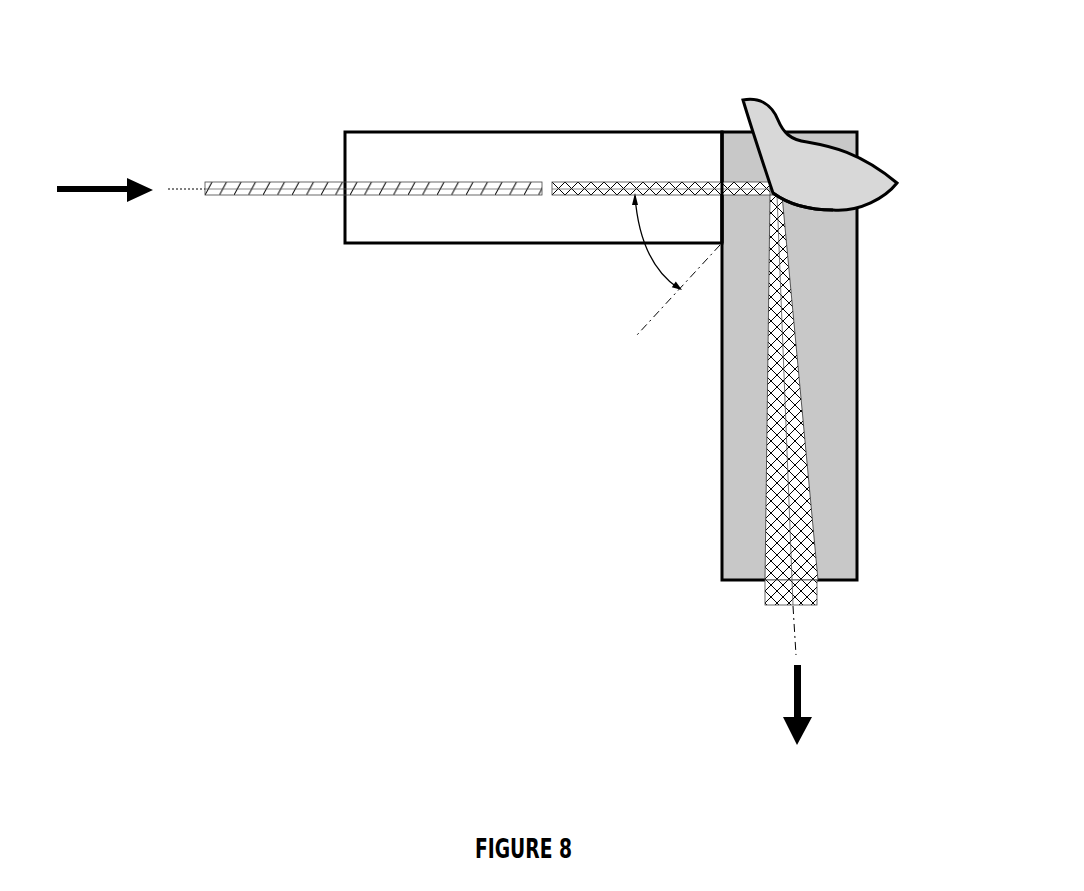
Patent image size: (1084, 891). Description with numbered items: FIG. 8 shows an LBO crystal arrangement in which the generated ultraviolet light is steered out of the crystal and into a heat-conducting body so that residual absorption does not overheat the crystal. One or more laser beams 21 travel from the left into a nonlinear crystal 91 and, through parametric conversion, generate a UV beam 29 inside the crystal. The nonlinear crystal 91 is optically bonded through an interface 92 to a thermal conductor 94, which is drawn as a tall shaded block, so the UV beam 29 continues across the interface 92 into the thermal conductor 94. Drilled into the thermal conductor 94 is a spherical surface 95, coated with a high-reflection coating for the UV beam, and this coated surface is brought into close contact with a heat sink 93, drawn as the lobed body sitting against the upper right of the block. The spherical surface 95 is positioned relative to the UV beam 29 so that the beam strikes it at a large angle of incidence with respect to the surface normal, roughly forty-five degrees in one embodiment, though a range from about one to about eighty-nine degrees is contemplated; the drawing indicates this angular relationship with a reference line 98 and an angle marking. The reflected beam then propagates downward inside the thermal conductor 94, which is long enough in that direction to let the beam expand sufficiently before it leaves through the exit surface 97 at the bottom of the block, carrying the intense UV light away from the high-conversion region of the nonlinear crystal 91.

The laser beam 21 is at (281, 180).
The UV beam 29 is at (637, 182).
The nonlinear crystal 91 is at (530, 132).
The interface 92 is at (720, 172).
The heat sink 93 is at (858, 148).
The thermal conductor 94 is at (737, 356).
The spherical surface 95 is at (807, 212).
The exit surface 97 is at (740, 583).
The reference axis 98 is at (657, 308).